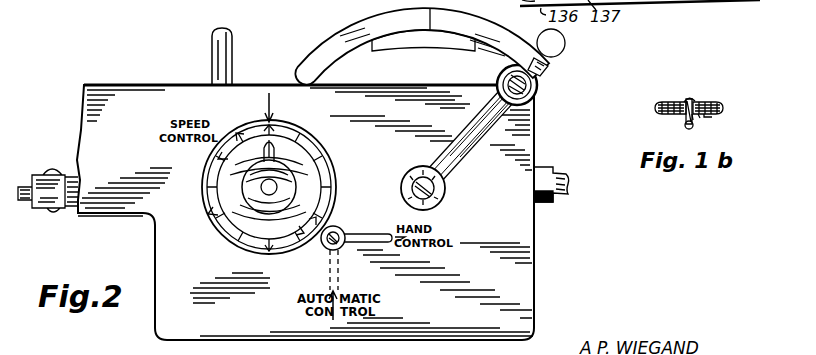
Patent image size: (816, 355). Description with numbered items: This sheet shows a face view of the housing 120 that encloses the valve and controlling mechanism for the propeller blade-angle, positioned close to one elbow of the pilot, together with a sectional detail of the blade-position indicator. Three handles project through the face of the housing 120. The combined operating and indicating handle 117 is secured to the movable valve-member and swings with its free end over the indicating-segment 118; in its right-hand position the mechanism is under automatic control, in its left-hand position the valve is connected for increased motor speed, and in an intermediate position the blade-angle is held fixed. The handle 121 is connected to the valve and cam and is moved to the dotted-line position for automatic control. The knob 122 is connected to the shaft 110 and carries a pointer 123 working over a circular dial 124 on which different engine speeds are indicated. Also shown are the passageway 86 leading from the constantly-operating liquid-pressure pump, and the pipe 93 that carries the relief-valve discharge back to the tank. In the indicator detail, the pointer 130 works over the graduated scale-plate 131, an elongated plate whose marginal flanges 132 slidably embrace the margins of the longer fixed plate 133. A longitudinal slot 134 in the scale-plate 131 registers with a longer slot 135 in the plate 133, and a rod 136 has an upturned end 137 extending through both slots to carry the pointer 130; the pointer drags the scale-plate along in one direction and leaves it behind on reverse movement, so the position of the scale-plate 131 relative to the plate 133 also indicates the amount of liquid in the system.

In FIG. 2, the passageway 86 is at (560, 175).
In FIG. 2, the pipe 93 is at (232, 48).
In FIG. 2, the shaft 110 is at (268, 188).
In FIG. 2, the combined operating and indicating handle 117 is at (472, 128).
In FIG. 2, the indicating-segment 118 is at (390, 14).
In FIG. 2, the housing 120 is at (522, 290).
In FIG. 2, the handle 121 is at (355, 233).
In FIG. 2, the knob 122 is at (290, 180).
In FIG. 2, the pointer 123 is at (273, 148).
In FIG. 2, the circular dial 124 is at (213, 209).
In FIG. 1B, the pointer 130 is at (680, 100).
In FIG. 1B, the scale-plate 131 is at (722, 108).
In FIG. 1B, the flanges 132 is at (708, 115).
In FIG. 1B, the plate 133 is at (700, 117).
In FIG. 1B, the longitudinal slot 134 is at (694, 101).
In FIG. 1B, the slot 135 is at (684, 114).
In FIG. 1B, the rod 136 is at (687, 129).
In FIG. 1B, the upturned end 137 is at (693, 119).